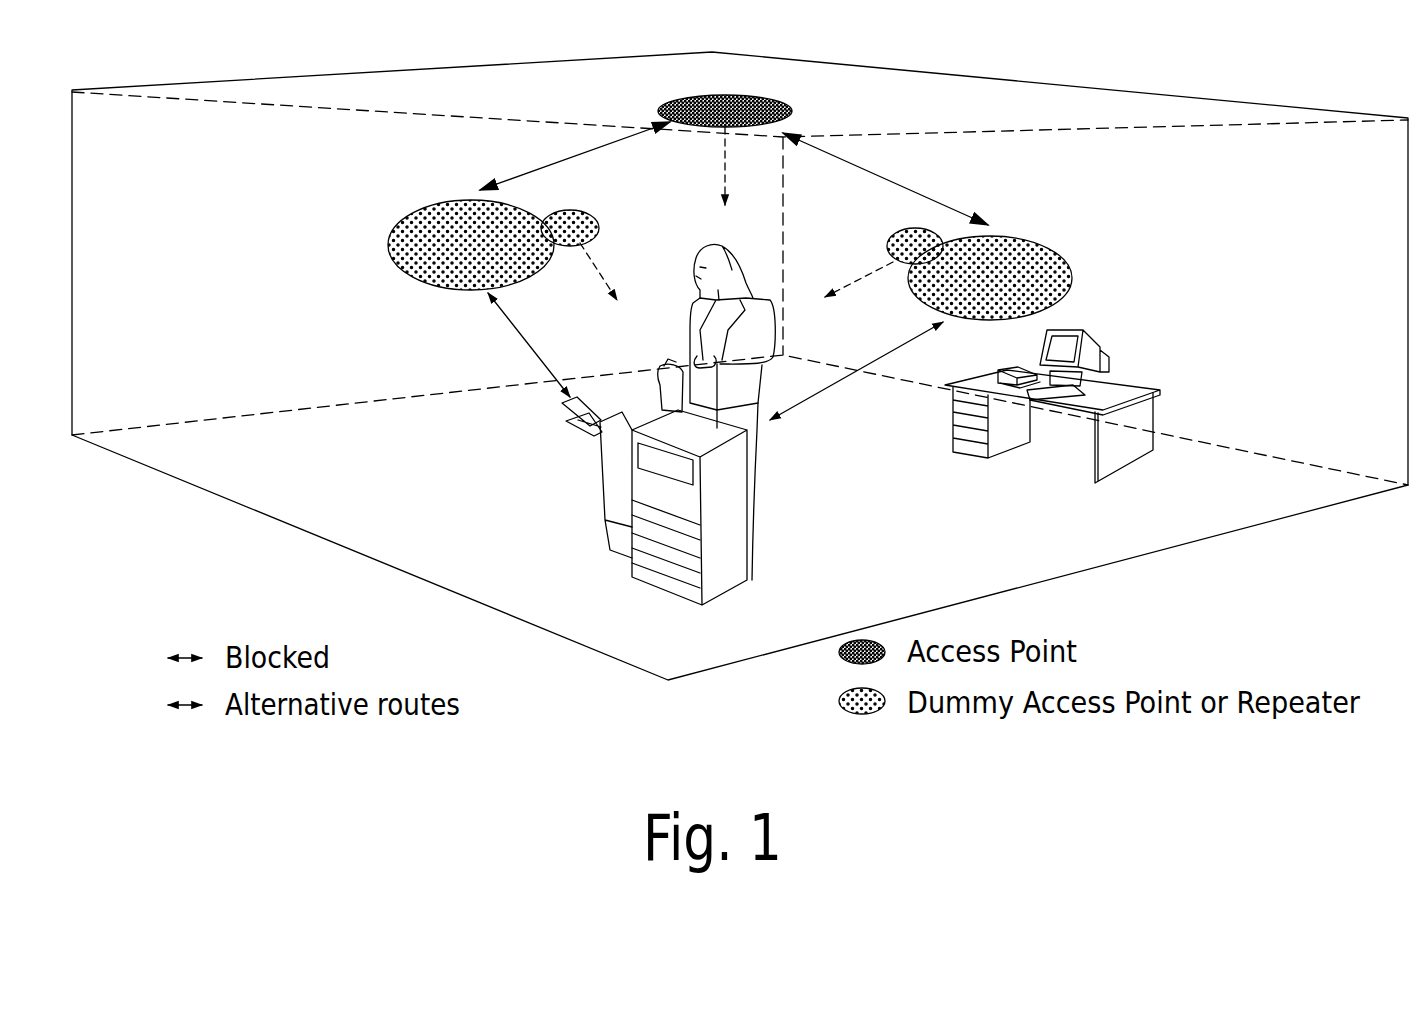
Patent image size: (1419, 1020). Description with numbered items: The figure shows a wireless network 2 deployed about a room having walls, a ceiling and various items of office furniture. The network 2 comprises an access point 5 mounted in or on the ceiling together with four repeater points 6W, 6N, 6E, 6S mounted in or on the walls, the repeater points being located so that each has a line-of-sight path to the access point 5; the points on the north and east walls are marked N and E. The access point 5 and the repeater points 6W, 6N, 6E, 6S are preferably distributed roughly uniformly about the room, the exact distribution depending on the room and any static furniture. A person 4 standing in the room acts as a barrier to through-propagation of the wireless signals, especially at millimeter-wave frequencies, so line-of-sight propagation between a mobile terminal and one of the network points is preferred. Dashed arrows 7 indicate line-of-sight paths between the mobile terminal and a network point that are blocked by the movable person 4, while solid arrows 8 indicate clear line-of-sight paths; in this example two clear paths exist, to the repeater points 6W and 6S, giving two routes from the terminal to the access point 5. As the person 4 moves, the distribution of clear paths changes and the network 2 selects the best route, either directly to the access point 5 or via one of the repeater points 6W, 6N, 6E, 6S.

The network 2 is at (273, 62).
The person 4 is at (688, 328).
The access point 5 is at (688, 97).
The repeater point 6W is at (388, 256).
The repeater point 6N is at (609, 166).
The repeater point 6E is at (873, 208).
The repeater point 6S is at (1067, 258).
The dashed arrows 7 is at (723, 160).
The solid arrows 8 is at (530, 172).
The north dummy access point N is at (571, 216).
The east dummy access point E is at (913, 243).